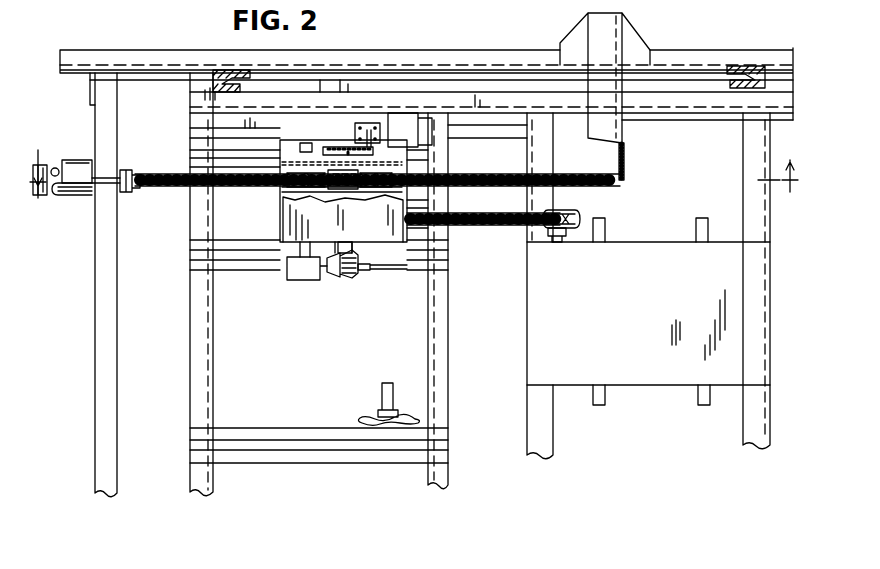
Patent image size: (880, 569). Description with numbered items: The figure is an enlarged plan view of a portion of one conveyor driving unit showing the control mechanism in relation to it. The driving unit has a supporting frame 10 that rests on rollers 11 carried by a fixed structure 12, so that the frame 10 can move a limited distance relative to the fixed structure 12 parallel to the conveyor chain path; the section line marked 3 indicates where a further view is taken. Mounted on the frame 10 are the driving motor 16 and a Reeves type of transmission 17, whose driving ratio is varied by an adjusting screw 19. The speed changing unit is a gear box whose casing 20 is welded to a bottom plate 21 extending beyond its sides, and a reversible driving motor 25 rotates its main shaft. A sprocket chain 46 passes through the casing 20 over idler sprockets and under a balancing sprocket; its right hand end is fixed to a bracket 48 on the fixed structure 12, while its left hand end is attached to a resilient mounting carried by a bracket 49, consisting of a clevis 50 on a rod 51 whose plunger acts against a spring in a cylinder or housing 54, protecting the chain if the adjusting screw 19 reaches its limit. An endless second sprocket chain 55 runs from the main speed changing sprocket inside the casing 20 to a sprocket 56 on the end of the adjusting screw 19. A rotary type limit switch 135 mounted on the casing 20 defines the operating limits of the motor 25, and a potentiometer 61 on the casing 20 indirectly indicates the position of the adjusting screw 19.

The section line 3- 3 is at (415, 162).
The supporting frame 10 is at (190, 107).
The rollers 11 is at (218, 68).
The fixed structure 12 is at (677, 53).
The driving motor 16 is at (366, 416).
The Reeves type of transmission 17 is at (656, 312).
The adjusting screw 19 is at (558, 242).
The casing 20 is at (283, 197).
The bottom plate 21 is at (378, 253).
The driving motor 25 is at (432, 133).
The sprocket chain 46 is at (176, 187).
The bracket 48 is at (625, 156).
The bracket 49 is at (84, 160).
The clevis 50 is at (134, 172).
The rod 51 is at (120, 176).
The cylinder or housing 54 is at (76, 192).
The second sprocket chain 55 is at (483, 236).
The sprocket 56 is at (572, 212).
The potentiometer 61 is at (362, 276).
The rotary type limit switch 135 is at (310, 278).